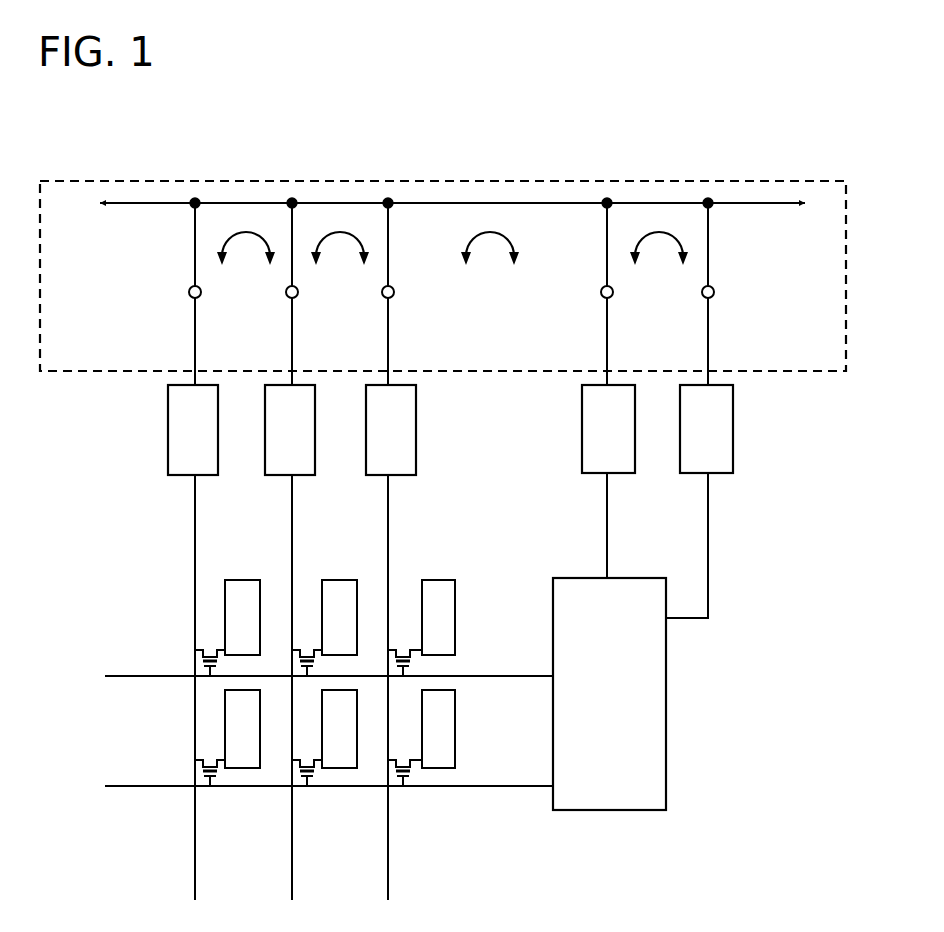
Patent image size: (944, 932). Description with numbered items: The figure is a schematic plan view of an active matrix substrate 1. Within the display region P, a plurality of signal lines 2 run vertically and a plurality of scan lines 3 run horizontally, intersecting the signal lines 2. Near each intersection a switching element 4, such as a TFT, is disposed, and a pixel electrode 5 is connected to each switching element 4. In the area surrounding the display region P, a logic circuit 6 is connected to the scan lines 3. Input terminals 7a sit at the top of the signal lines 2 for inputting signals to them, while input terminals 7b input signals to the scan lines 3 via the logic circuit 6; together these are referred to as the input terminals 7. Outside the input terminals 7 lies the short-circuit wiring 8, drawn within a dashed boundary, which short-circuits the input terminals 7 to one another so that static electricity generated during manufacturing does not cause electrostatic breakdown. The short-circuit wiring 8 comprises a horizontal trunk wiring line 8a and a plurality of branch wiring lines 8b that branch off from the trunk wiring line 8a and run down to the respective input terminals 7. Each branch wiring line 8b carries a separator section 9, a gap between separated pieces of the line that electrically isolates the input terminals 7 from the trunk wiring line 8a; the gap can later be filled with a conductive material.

The active matrix substrate 1 is at (768, 676).
The signal lines 2 is at (195, 874).
The scan lines 3 is at (135, 788).
The switching elements 4 is at (210, 758).
The pixel electrodes 5 is at (242, 768).
The logic circuit 6 is at (600, 810).
The input terminals 7 is at (425, 454).
The input terminals for signal lines 7a is at (168, 444).
The input terminals for scan lines 7b is at (582, 444).
The short-circuit wiring 8 is at (770, 371).
The trunk wiring line 8a is at (766, 205).
The branch wiring lines 8b is at (195, 243).
The separator sections 9 is at (189, 292).
The display region P is at (304, 695).